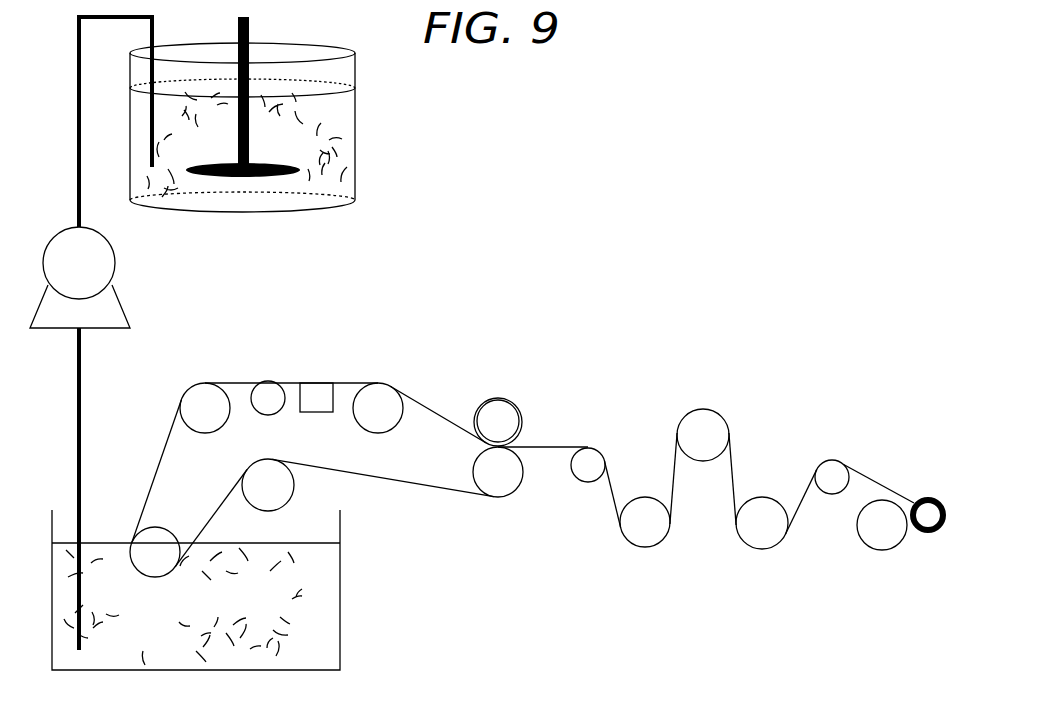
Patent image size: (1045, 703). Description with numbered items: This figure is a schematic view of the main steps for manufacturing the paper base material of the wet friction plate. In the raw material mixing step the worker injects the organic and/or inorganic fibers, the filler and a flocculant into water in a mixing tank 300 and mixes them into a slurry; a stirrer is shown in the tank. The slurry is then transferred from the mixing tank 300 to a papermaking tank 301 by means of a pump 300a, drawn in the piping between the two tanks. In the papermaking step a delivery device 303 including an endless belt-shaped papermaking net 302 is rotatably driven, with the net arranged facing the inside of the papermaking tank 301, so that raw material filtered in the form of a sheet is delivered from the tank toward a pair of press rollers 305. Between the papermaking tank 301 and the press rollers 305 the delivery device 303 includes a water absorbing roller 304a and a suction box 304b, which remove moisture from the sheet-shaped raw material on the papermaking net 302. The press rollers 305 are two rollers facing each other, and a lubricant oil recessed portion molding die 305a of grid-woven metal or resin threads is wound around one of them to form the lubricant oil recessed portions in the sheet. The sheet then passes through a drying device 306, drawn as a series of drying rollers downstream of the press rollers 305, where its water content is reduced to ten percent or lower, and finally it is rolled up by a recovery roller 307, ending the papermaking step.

The mixing tank 300 is at (355, 127).
The pump 300a is at (115, 262).
The papermaking tank 301 is at (340, 628).
The papermaking net 302 is at (397, 485).
The delivery device 303 is at (205, 433).
The water absorbing roller 304a is at (279, 412).
The suction box 304b is at (292, 381).
The press rollers 305 is at (521, 497).
The lubricant oil recessed portion molding die 305a is at (496, 397).
The drying device 306 is at (703, 409).
The recovery roller 307 is at (928, 533).